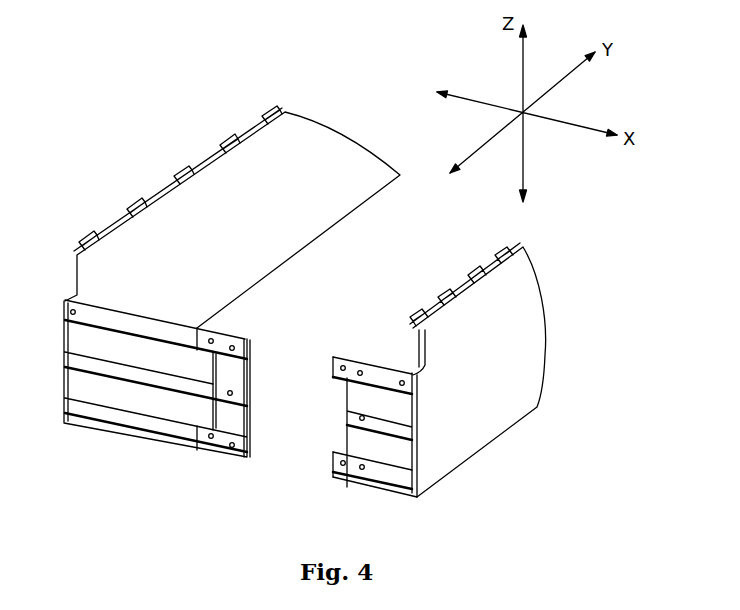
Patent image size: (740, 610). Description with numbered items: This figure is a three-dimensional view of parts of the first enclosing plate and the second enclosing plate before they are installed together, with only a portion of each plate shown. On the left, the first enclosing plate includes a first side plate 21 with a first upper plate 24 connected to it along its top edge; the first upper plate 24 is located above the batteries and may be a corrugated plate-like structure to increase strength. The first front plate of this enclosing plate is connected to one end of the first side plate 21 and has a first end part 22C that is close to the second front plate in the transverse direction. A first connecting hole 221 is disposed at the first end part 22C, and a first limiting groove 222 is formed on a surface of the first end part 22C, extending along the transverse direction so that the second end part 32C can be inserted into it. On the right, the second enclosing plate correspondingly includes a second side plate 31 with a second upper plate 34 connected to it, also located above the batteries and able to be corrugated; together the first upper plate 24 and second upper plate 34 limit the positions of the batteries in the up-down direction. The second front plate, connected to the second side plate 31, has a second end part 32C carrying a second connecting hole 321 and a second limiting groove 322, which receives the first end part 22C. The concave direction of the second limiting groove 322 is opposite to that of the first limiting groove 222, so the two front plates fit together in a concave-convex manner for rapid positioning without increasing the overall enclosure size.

The first side plate 21 is at (283, 246).
The first upper plate 24 is at (189, 182).
The first end part 22C is at (257, 382).
The first connecting hole 221 is at (218, 326).
The first limiting groove 222 is at (251, 338).
The second side plate 31 is at (500, 410).
The second upper plate 34 is at (483, 286).
The second end part 32C is at (327, 420).
The second connecting hole 321 is at (335, 357).
The second limiting groove 322 is at (379, 366).